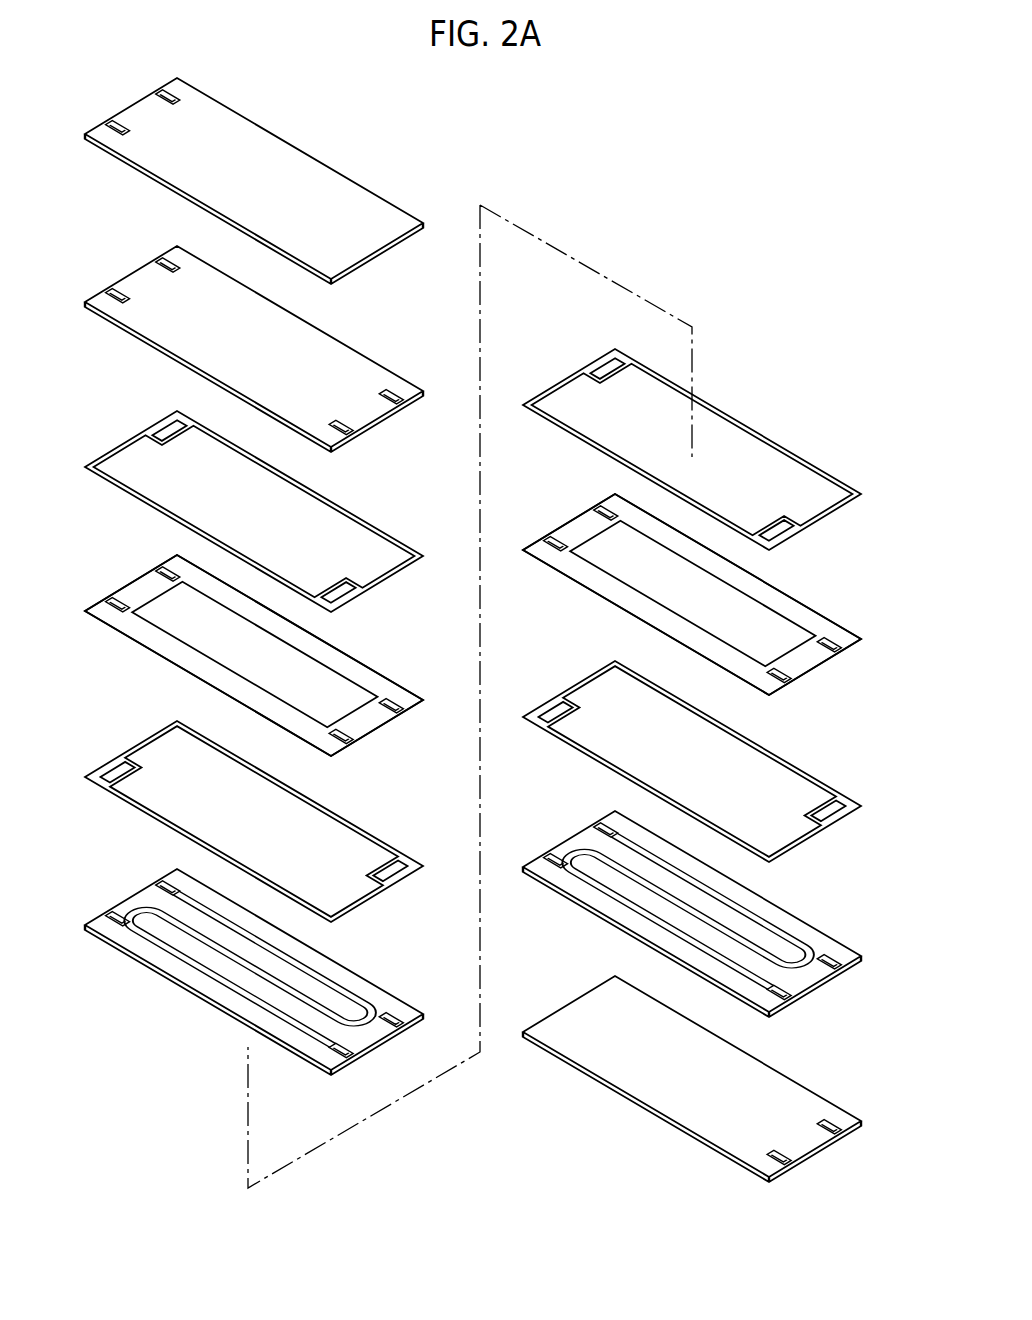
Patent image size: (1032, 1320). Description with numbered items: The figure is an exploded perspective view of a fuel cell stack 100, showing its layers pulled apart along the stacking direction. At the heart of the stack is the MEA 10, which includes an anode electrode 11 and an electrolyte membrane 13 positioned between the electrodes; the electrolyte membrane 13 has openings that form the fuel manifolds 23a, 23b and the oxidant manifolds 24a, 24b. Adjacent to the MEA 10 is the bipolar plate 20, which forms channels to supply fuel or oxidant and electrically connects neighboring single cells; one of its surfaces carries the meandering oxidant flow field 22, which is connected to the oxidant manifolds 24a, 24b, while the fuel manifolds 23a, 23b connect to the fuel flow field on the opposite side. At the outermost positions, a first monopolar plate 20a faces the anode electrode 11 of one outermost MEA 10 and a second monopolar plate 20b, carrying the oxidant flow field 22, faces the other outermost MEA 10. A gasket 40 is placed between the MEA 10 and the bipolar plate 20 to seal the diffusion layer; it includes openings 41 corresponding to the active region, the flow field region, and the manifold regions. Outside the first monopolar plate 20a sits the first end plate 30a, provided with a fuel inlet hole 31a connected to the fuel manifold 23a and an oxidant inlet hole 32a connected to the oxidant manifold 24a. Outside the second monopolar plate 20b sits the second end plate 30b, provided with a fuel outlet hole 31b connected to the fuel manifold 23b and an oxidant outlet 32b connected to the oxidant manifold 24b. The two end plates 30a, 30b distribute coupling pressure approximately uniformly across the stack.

The fuel cell stack 100 is at (338, 126).
The first end plate 30a is at (390, 212).
The second end plate 30b is at (808, 1102).
The fuel inlet hole 31a is at (115, 125).
The oxidant inlet hole 32a is at (163, 94).
The fuel outlet hole 31b is at (835, 1132).
The oxidant outlet 32b is at (785, 1163).
The first monopolar plate 20a is at (390, 382).
The bipolar plate 20 is at (388, 1002).
The second monopolar plate 20b is at (826, 942).
The oxidant flow field 22 is at (325, 978).
The fuel manifold 23a is at (115, 293).
The fuel manifold 23b is at (397, 402).
The oxidant manifold 24a is at (163, 262).
The oxidant manifold 24b is at (345, 432).
The gasket 40 is at (370, 527).
The openings 41 is at (168, 428).
The MEA 10 is at (362, 660).
The anode electrode 11 is at (310, 668).
The electrolyte membrane 13 is at (390, 688).